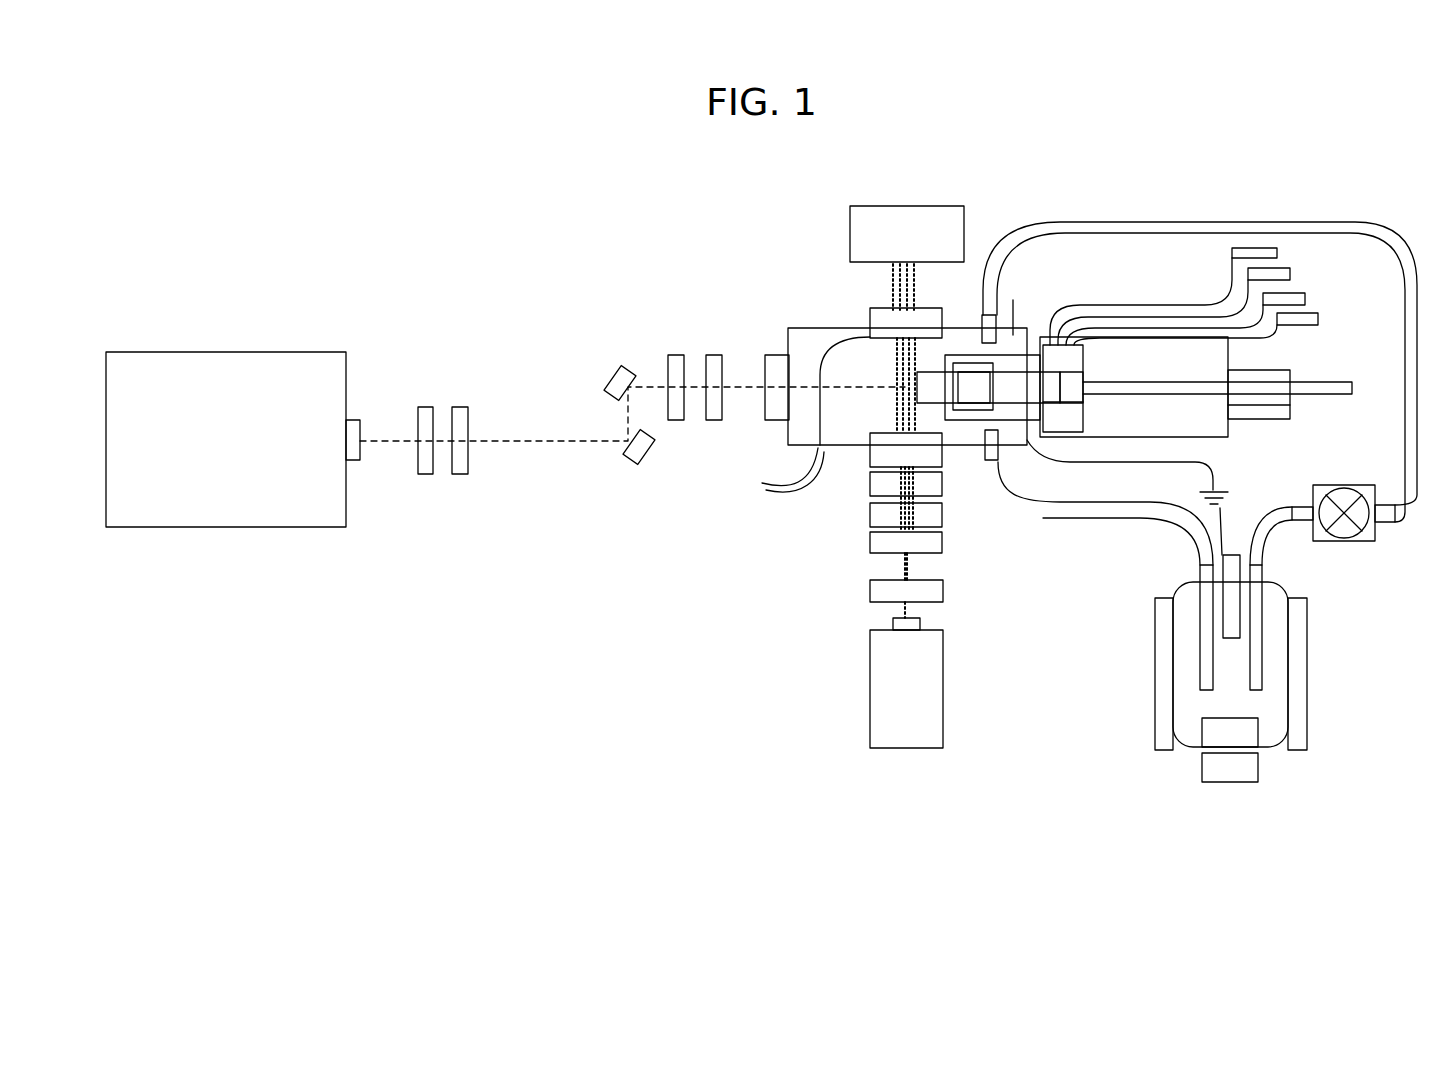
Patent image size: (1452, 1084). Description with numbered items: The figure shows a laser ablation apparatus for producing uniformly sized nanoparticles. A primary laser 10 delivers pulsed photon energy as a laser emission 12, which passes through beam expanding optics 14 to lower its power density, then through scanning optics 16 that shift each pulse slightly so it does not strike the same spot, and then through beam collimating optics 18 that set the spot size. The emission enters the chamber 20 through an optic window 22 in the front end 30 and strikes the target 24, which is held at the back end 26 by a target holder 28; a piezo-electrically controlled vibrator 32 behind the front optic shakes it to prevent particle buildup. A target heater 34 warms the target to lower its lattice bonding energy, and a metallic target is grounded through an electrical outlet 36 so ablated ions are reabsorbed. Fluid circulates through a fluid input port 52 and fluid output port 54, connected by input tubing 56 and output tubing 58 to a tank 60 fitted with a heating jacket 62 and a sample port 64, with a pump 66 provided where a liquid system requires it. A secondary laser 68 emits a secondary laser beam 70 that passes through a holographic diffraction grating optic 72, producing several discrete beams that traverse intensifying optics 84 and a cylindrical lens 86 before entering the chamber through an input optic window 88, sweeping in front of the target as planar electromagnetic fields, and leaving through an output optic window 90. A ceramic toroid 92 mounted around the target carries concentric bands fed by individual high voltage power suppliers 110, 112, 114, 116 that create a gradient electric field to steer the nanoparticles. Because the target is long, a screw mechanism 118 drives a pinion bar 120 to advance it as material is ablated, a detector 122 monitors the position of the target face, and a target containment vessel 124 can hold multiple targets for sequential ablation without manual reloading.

The primary laser 10 is at (340, 385).
The laser emission 12 is at (373, 443).
The beam expanding optics 14 is at (427, 420).
The scanning optics 16 is at (615, 393).
The beam collimating optics 18 is at (677, 362).
The chamber 20 is at (820, 355).
The optic window 22 is at (783, 400).
The target 24 is at (988, 387).
The back end 26 is at (1045, 340).
The target holder 28 is at (1028, 335).
The front end 30 is at (800, 345).
The piezo-electrically controlled vibrator 32 is at (783, 470).
The target heater 34 is at (1013, 310).
The electrical outlet 36 is at (1222, 490).
The fluid input port 52 is at (991, 455).
The fluid output port 54 is at (993, 322).
The input tubing 56 is at (1050, 508).
The output tubing 58 is at (1074, 228).
The tank 60 is at (1190, 731).
The heating jacket 62 is at (1300, 665).
The sample port 64 is at (1218, 520).
The pump 66 is at (1350, 530).
The secondary laser 68 is at (907, 675).
The secondary laser beam 70 is at (907, 610).
The holographic diffraction grating optic 72 is at (878, 592).
The intensifying optics 84 is at (875, 533).
The cylindrical lens 86 is at (876, 505).
The input optic window 88 is at (878, 455).
The output optic window 90 is at (877, 322).
The ceramic toroid 92 is at (1063, 388).
The high voltage power supplier 110 is at (1277, 254).
The high voltage power supplier 112 is at (1290, 275).
The high voltage power supplier 114 is at (1305, 300).
The high voltage power supplier 116 is at (1318, 320).
The screw mechanism 118 is at (1255, 413).
The pinion bar 120 is at (1315, 390).
The detector 122 is at (965, 222).
The target containment vessel 124 is at (1134, 387).